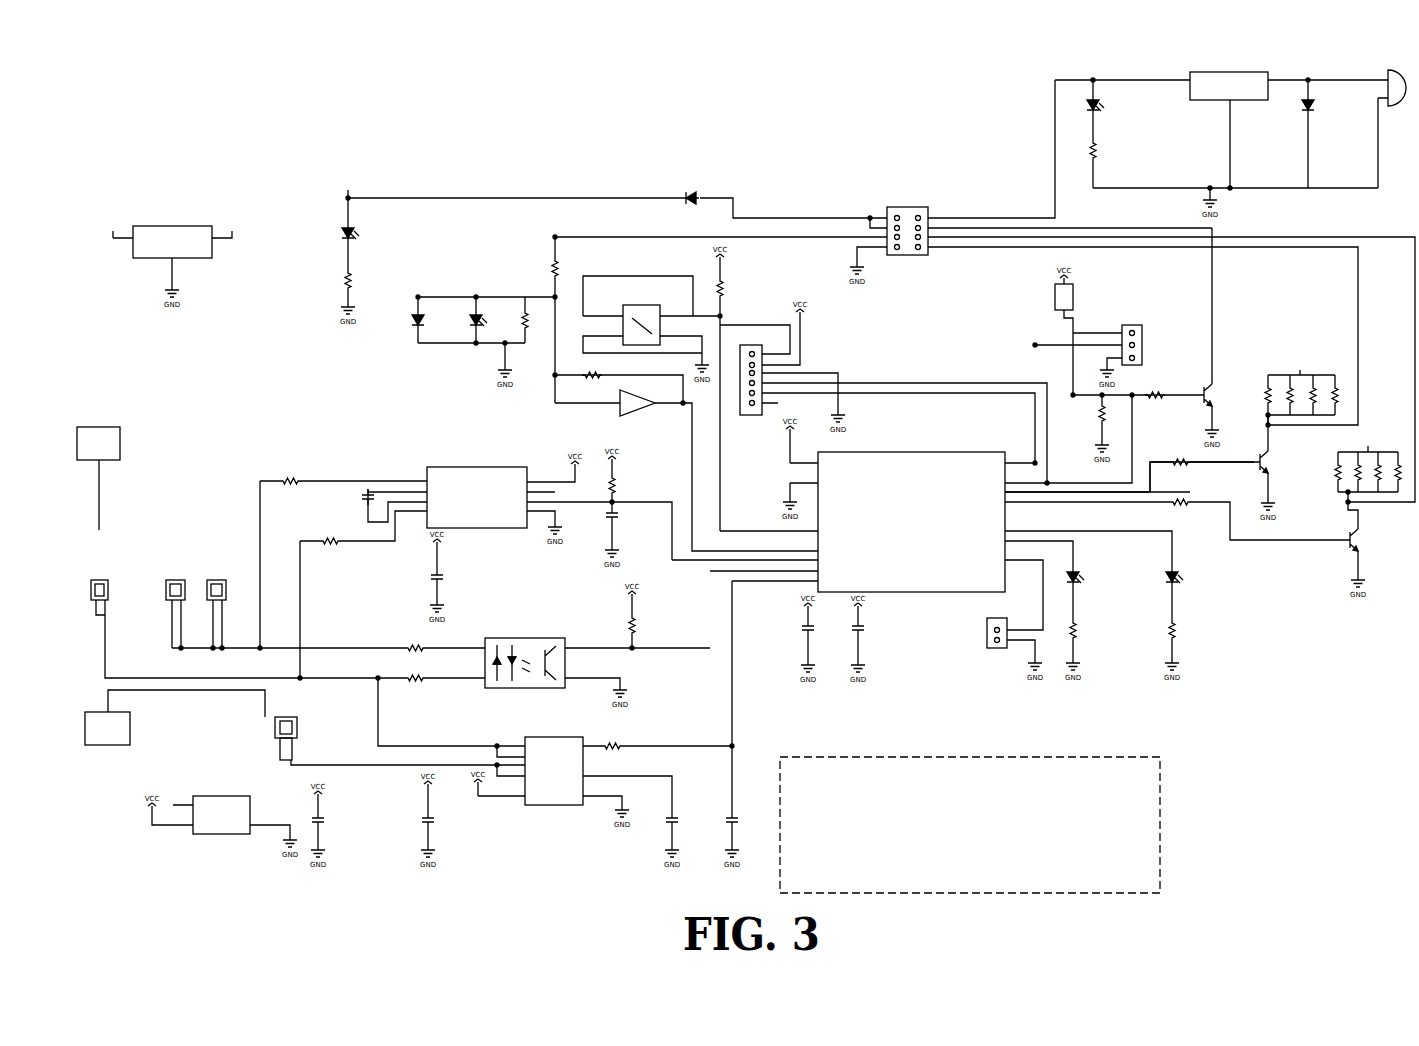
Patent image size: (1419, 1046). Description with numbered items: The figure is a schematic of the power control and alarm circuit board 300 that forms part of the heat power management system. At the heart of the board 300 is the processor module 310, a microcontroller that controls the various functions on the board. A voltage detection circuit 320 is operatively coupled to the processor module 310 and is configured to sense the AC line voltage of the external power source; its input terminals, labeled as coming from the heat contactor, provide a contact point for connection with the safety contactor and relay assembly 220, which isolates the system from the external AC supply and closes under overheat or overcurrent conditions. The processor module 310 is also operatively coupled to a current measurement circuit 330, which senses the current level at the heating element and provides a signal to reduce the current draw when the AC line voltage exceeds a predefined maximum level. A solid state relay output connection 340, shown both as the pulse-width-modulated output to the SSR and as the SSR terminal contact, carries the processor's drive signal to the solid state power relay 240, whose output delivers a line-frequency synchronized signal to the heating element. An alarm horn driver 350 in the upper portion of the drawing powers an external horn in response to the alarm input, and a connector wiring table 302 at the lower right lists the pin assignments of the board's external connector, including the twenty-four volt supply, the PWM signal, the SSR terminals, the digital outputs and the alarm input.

The power control and alarm circuit board 300 is at (502, 84).
The alarm horn driver 350 is at (1182, 63).
The solid state relay output connection 340 is at (1183, 325).
The processor module 310 is at (898, 448).
The voltage detection circuit 320 is at (538, 458).
The safety contactor and relay assembly 220 is at (99, 478).
The solid state power relay 240 is at (175, 717).
The current measurement circuit 330 is at (555, 818).
The connector wiring table 302 is at (1110, 757).